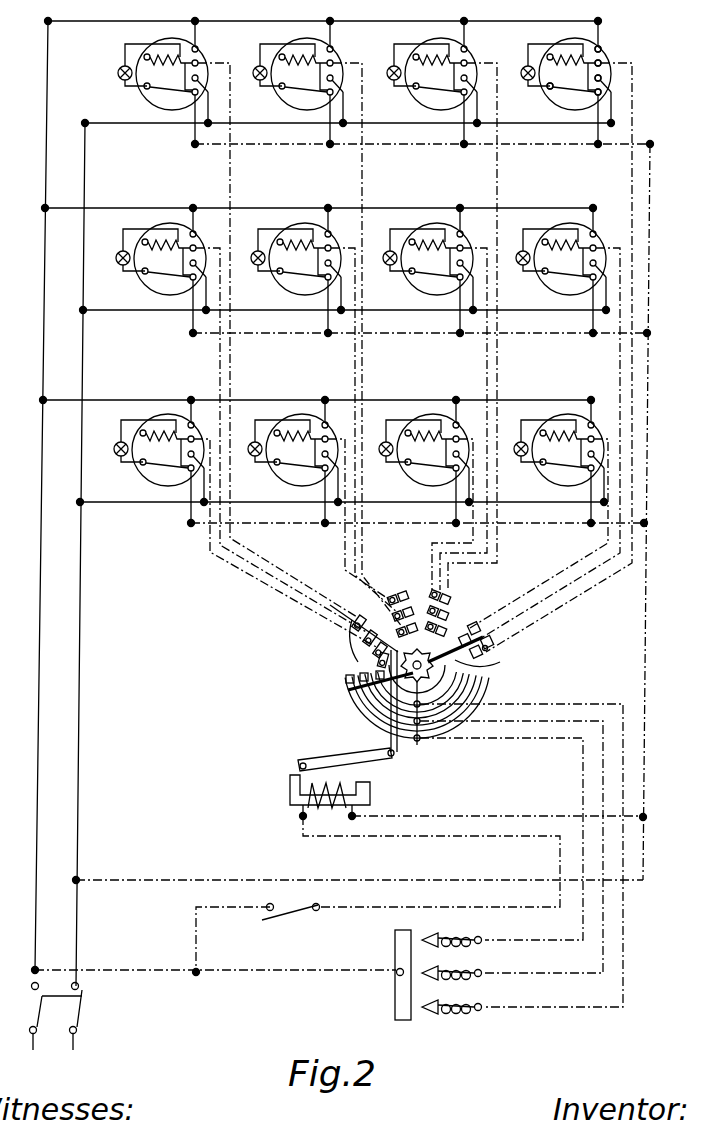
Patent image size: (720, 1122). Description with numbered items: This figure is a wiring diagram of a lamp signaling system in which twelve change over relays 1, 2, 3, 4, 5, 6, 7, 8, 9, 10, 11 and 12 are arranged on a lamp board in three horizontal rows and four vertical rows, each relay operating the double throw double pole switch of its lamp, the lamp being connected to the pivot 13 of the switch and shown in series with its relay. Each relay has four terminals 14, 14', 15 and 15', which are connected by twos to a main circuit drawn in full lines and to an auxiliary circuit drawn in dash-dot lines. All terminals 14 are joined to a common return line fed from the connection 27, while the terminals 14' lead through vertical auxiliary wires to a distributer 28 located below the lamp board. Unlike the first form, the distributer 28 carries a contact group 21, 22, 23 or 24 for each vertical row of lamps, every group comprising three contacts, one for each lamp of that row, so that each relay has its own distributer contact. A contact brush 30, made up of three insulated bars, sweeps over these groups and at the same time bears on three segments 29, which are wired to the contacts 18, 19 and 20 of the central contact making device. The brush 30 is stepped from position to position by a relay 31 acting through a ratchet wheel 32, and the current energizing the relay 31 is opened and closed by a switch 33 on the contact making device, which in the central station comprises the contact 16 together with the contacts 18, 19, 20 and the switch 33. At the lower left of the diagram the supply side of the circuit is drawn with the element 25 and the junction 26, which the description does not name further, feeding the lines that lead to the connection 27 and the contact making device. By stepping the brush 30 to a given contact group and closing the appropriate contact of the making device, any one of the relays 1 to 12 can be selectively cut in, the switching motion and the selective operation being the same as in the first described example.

The change over relay 1 is at (572, 44).
The change over relay 2 is at (566, 232).
The change over relay 3 is at (565, 424).
The change over relay 4 is at (441, 44).
The change over relay 5 is at (433, 232).
The change over relay 6 is at (432, 424).
The change over relay 7 is at (305, 44).
The change over relay 8 is at (297, 232).
The change over relay 9 is at (296, 424).
The change over relay 10 is at (172, 44).
The change over relay 11 is at (160, 232).
The change over relay 12 is at (160, 424).
The pivot 13 is at (547, 90).
The terminal 14 is at (629, 102).
The terminal 14' is at (626, 57).
The terminal 15 is at (629, 79).
The terminal 15' is at (622, 38).
The contact 16 is at (396, 994).
The contact 18 is at (438, 940).
The contact 19 is at (440, 970).
The contact 20 is at (443, 1005).
The contact group 21 is at (490, 655).
The contact group 22 is at (452, 604).
The contact group 23 is at (400, 592).
The contact group 24 is at (363, 656).
The battery 25 is at (79, 1012).
The conductor junction 26 is at (37, 967).
The connection 27 is at (78, 878).
The distributer 28 is at (413, 683).
The segment 29 is at (460, 700).
The contact brush 30 is at (348, 690).
The relay 31 is at (300, 778).
The ratchet wheel 32 is at (380, 612).
The switch 33 is at (292, 915).